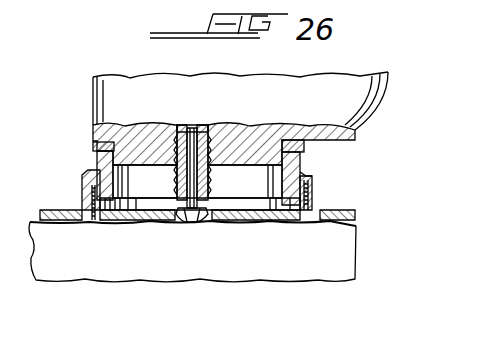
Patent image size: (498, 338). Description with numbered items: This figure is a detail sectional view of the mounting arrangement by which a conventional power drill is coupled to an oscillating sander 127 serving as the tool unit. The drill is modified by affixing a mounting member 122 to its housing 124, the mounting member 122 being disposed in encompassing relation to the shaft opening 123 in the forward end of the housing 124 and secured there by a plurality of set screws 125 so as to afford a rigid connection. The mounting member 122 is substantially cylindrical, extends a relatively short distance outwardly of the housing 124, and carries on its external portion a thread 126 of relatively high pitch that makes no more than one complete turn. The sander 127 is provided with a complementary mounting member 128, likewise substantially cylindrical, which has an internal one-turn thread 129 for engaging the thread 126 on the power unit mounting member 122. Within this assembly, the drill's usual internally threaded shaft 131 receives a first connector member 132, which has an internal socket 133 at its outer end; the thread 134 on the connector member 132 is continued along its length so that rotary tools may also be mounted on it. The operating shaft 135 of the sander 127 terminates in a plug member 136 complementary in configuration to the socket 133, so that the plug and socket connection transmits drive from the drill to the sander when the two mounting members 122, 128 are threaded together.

The mounting member 122 is at (300, 163).
The shaft opening 123 is at (179, 167).
The housing 124 is at (356, 134).
The set screws 125 is at (93, 146).
The thread 126 is at (315, 183).
The oscillating sander 127 is at (315, 268).
The mounting member 128 is at (308, 205).
The internal one-turn thread 129 is at (301, 187).
The internally threaded shaft 131 is at (181, 135).
The first connector member 132 is at (208, 168).
The internal socket 133 is at (206, 128).
The thread 134 is at (180, 196).
The operating shaft 135 is at (197, 222).
The plug member 136 is at (186, 212).